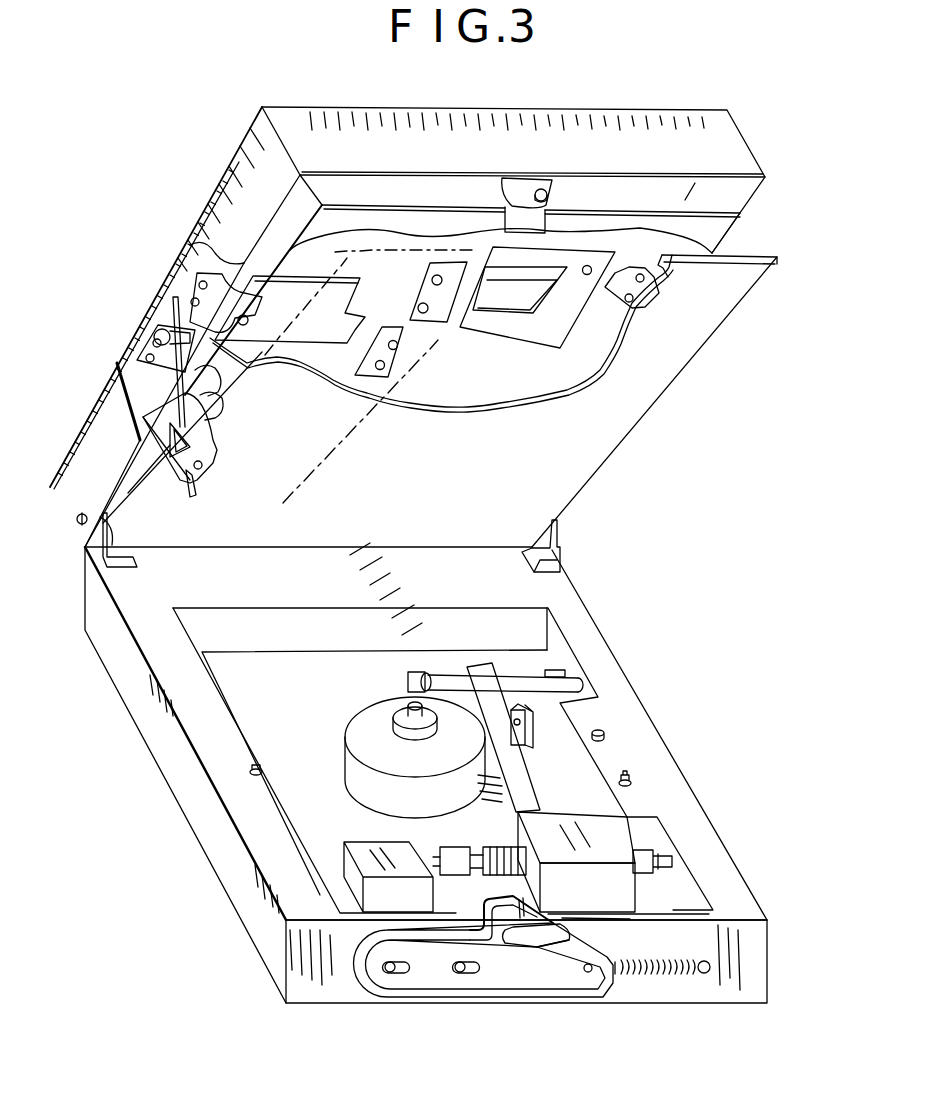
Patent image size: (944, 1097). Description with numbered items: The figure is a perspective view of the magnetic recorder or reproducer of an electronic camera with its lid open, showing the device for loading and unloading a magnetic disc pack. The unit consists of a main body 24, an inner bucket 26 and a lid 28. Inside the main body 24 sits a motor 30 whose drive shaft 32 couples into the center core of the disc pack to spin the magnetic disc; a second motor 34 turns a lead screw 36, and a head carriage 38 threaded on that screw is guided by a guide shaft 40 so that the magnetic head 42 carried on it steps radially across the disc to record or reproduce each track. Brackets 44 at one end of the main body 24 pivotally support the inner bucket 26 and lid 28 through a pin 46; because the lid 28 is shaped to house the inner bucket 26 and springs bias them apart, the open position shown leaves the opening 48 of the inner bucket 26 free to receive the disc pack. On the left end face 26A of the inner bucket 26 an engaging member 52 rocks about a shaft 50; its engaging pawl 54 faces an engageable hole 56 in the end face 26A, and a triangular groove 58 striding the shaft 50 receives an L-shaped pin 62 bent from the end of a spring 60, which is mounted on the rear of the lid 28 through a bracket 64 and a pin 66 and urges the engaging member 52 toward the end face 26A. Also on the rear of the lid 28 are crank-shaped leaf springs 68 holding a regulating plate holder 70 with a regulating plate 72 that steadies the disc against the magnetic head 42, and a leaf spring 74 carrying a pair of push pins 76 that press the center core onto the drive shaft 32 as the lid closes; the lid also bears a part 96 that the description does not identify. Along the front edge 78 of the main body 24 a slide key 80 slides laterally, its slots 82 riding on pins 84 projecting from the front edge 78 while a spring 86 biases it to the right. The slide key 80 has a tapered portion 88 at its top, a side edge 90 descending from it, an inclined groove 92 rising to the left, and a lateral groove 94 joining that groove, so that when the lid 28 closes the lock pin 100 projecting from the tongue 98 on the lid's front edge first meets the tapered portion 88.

The main body 24 is at (195, 793).
The inner bucket 26 is at (133, 490).
The left end face of the inner bucket 26A is at (147, 477).
The lid 28 is at (229, 213).
The motor 30 is at (363, 735).
The drive shaft 32 is at (410, 707).
The motor 34 is at (373, 845).
The lead screw 36 is at (509, 848).
The head carriage 38 is at (602, 840).
The guide shaft 40 is at (525, 683).
The magnetic head 42 is at (530, 720).
The brackets 44 is at (100, 560).
The pin 46 is at (78, 522).
The opening 48 is at (718, 240).
The shaft 50 is at (200, 468).
The engaging member 52 is at (222, 440).
The engaging pawl 54 is at (213, 402).
The engageable hole 56 is at (240, 372).
The groove 58 is at (190, 481).
The spring 60 is at (122, 368).
The pin 62 is at (203, 427).
The bracket 64 is at (173, 318).
The pin 66 is at (155, 342).
The leaf springs 68 is at (190, 290).
The regulating plate holder 70 is at (598, 360).
The regulating plate 72 is at (500, 327).
The leaf spring 74 is at (403, 333).
The push pins 76 is at (437, 278).
The front edge 78 is at (693, 947).
The slide key 80 is at (518, 975).
The slots 82 is at (408, 973).
The pins 84 is at (383, 970).
The spring 86 is at (651, 982).
The tapered portion 88 is at (520, 900).
The side edge 90 is at (577, 930).
The inclined groove 92 is at (549, 947).
The lateral groove 94 is at (481, 935).
The lid top wall 96 is at (450, 130).
The tongue 98 is at (528, 180).
The lock pin 100 is at (548, 188).